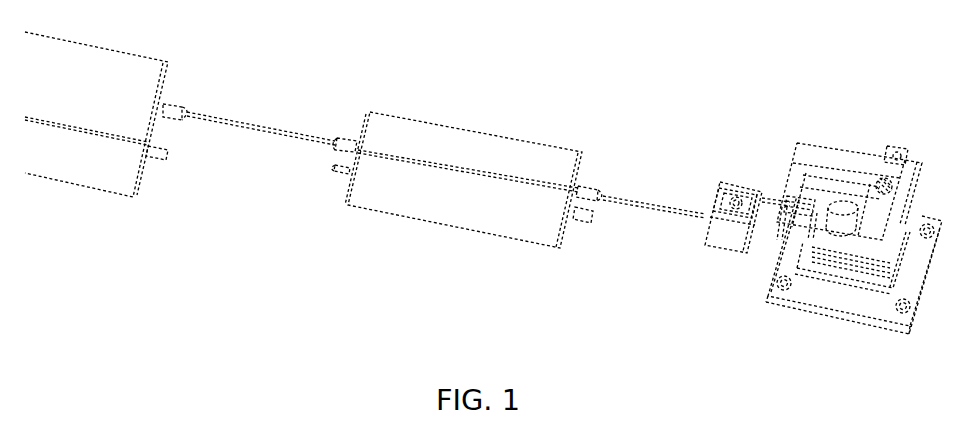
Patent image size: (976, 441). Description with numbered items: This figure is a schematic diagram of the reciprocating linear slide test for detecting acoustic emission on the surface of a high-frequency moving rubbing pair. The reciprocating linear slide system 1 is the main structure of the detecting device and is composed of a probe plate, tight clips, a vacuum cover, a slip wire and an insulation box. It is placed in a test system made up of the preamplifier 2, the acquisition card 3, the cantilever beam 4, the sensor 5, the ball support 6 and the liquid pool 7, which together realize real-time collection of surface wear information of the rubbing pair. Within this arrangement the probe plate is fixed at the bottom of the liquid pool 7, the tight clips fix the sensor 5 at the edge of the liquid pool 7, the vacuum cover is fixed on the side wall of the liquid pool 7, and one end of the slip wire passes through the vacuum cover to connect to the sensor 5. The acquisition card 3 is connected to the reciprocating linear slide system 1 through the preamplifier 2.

The reciprocating linear slide system 1 is at (736, 183).
The preamplifier 2 is at (467, 153).
The acquisition card 3 is at (105, 93).
The cantilever beam 4 is at (825, 172).
The sensor 5 is at (836, 217).
The ball support 6 is at (886, 177).
The liquid pool 7 is at (905, 222).